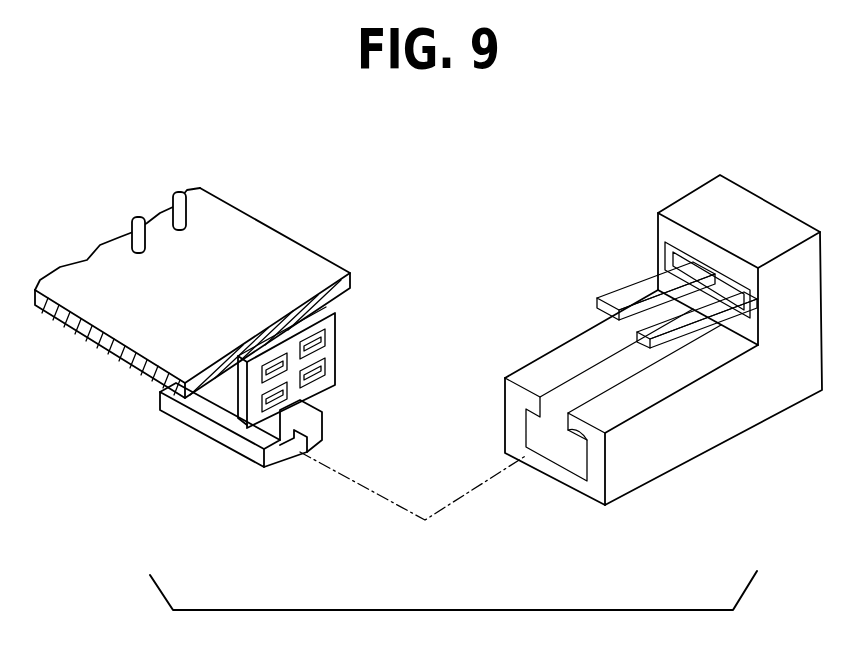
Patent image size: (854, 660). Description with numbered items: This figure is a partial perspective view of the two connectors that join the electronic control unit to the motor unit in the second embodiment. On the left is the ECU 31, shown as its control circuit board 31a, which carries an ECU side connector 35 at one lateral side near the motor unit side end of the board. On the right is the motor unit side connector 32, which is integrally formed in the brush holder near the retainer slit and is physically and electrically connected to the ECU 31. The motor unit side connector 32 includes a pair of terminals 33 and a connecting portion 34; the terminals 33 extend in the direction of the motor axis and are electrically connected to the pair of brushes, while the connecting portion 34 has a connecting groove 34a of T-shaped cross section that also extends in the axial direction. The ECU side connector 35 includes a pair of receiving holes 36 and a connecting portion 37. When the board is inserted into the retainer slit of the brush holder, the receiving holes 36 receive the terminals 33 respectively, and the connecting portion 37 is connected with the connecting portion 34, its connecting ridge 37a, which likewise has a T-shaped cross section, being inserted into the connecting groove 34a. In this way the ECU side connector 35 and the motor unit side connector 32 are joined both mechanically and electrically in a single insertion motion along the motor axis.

The ECU 31 is at (257, 217).
The control circuit board 31a is at (318, 261).
The motor unit side connector 32 is at (737, 417).
The terminals 33 is at (665, 323).
The connecting portion 34 is at (528, 373).
The connecting groove 34a is at (572, 458).
The ECU side connector 35 is at (217, 390).
The receiving holes 36 is at (275, 393).
The connecting portion 37 is at (228, 452).
The connecting ridge 37a is at (288, 458).